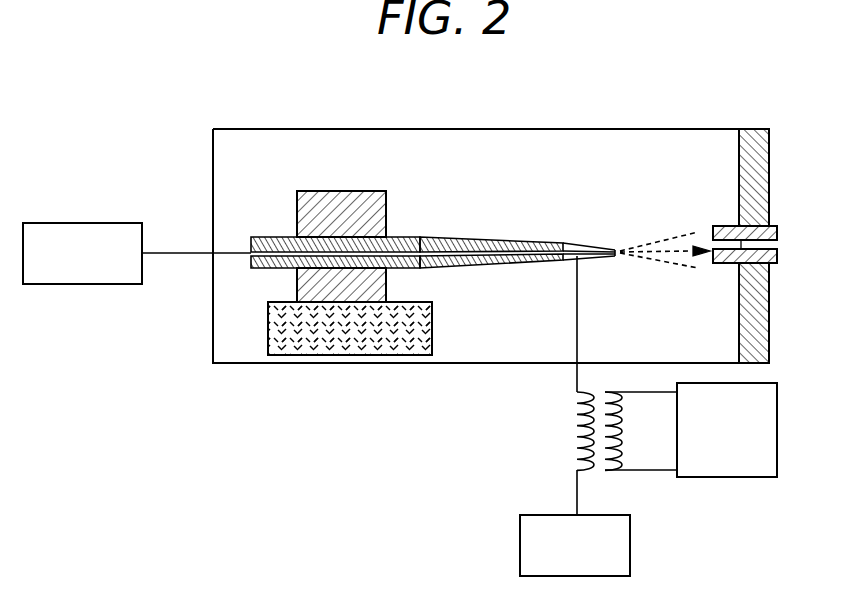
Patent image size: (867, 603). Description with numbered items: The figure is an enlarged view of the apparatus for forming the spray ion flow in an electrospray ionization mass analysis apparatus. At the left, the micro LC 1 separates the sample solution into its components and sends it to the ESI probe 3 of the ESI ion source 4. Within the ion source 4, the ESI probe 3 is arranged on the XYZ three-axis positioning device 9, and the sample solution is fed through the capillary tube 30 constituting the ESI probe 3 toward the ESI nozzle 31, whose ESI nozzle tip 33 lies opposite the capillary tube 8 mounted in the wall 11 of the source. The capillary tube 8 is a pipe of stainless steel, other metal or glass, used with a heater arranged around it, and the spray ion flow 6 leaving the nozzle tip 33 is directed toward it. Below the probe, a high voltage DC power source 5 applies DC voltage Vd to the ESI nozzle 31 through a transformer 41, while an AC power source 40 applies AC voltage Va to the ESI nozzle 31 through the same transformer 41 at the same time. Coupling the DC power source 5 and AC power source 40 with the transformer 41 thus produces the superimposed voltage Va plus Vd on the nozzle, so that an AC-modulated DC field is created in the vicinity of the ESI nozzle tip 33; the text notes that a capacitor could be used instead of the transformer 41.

The micro LC 1 is at (88, 223).
The ESI probe 3 is at (452, 219).
The ESI ion source 4 is at (523, 138).
The high voltage DC power source 5 is at (631, 545).
The ejected particle beam 6 is at (668, 258).
The capillary tube 8 is at (775, 222).
The XYZ three-axis positioning device 9 is at (353, 191).
The chamber wall with aperture 11 is at (761, 128).
The capillary tube 30 is at (434, 238).
The ESI nozzle 31 is at (539, 243).
The ESI nozzle tip 33 is at (617, 248).
The AC power source 40 is at (778, 440).
The transformer 41 is at (568, 437).